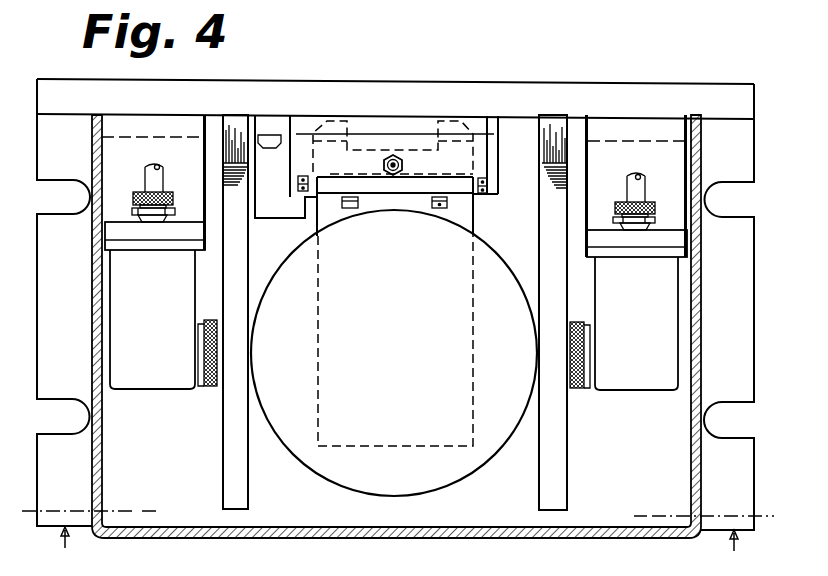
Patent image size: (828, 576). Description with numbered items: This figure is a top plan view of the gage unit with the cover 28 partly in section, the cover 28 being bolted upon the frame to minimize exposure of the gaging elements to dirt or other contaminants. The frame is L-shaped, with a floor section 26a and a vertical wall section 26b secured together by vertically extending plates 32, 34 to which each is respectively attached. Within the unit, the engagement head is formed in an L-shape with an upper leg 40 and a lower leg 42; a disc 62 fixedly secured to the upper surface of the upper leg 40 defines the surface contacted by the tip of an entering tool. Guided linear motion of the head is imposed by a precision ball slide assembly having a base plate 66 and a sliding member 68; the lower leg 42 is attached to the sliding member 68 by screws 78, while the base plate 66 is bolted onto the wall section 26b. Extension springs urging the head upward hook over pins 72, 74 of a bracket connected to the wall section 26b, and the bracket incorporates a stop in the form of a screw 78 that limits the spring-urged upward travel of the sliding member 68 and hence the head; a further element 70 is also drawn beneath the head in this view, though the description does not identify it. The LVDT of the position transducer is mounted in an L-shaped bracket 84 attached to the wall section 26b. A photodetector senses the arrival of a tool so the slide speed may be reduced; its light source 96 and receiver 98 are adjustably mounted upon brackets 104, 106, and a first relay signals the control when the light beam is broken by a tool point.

The floor section 26a is at (636, 497).
The vertical wall section 26b is at (604, 93).
The cover 28 is at (702, 318).
The vertically extending plate 32 is at (226, 441).
The vertically extending plate 34 is at (565, 460).
The upper leg 40 is at (327, 220).
The lower leg 42 is at (462, 185).
The disc 62 is at (347, 475).
The base plate 66 is at (391, 130).
The sliding member 68 is at (419, 161).
The support feet 70 is at (439, 208).
The pin 72 is at (303, 176).
The pin 74 is at (483, 177).
The screw 78 is at (392, 177).
The L-shaped bracket 84 is at (272, 155).
The light source 96 is at (625, 340).
The receiver 98 is at (142, 322).
The bracket 104 is at (176, 142).
The bracket 106 is at (645, 151).